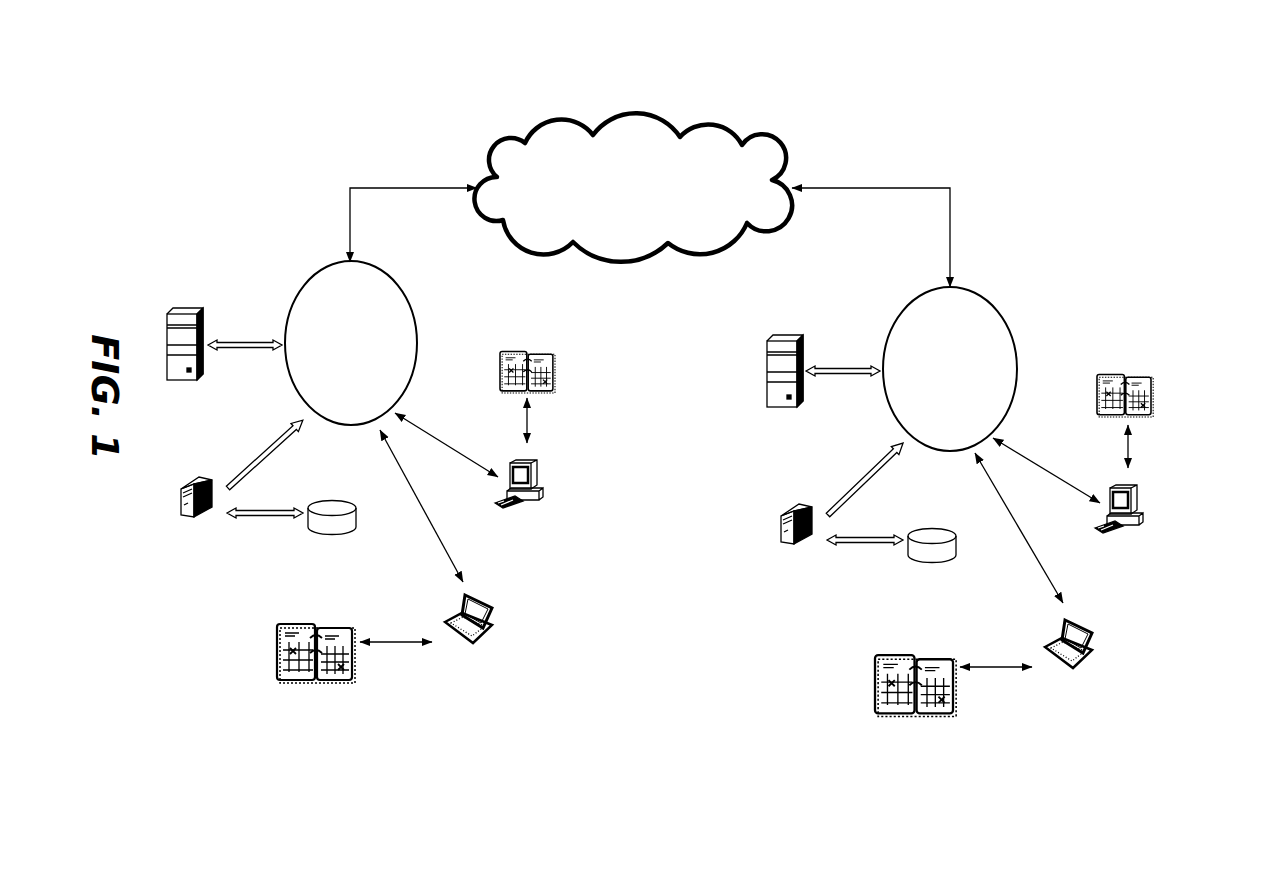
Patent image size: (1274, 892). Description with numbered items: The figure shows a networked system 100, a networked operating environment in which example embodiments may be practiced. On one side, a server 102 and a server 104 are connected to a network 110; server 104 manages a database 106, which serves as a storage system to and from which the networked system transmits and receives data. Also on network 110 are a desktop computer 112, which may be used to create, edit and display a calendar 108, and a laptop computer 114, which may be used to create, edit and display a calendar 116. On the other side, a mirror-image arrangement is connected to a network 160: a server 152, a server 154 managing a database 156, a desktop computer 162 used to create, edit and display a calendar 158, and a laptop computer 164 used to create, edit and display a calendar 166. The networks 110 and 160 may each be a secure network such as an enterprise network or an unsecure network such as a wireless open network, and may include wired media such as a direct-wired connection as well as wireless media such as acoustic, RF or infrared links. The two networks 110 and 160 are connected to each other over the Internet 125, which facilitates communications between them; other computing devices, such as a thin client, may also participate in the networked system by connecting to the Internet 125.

The networked system 100 is at (1246, 775).
The server 102 is at (213, 362).
The server 104 is at (201, 456).
The database 106 is at (369, 519).
The calendar 108 is at (530, 341).
The network 110 is at (413, 294).
The desktop computer 112 is at (537, 441).
The laptop computer 114 is at (499, 587).
The calendar 116 is at (331, 621).
The Internet 125 is at (636, 100).
The server 152 is at (812, 388).
The server 154 is at (801, 482).
The database 156 is at (969, 546).
The calendar 158 is at (1130, 364).
The network 160 is at (1002, 299).
The desktop computer 162 is at (1138, 467).
The laptop computer 164 is at (1099, 612).
The calendar 166 is at (929, 651).